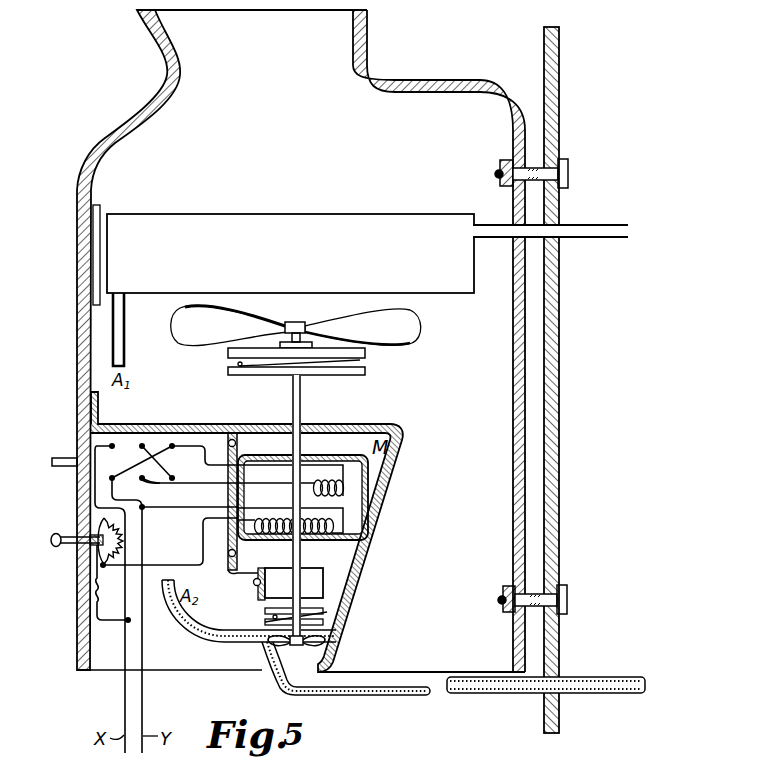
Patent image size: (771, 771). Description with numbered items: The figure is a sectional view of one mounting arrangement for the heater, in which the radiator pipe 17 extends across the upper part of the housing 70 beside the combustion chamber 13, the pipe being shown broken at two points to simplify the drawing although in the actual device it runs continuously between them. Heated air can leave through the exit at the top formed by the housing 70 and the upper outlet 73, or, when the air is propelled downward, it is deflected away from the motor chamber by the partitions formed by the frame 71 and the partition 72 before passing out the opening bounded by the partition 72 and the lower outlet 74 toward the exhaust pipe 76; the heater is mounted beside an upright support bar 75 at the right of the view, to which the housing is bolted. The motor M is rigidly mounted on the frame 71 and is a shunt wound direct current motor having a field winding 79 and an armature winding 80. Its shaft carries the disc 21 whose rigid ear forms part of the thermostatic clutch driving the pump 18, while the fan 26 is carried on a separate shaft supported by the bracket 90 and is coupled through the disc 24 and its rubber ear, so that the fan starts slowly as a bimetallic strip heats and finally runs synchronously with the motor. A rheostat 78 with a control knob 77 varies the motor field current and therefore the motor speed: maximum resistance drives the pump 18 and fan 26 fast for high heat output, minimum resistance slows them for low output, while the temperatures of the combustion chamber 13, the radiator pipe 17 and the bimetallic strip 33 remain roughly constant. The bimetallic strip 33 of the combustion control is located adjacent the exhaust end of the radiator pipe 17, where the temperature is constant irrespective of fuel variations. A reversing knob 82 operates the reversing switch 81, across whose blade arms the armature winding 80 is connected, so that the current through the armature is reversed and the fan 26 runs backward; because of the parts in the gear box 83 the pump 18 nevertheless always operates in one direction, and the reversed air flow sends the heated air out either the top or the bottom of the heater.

The combustion chamber 13 is at (430, 213).
The radiator pipe 17 is at (176, 216).
The pump 18 is at (270, 651).
The disc 21 is at (265, 610).
The disc 24 is at (368, 351).
The fan 26 is at (218, 315).
The bimetallic strip 33 is at (96, 247).
The housing 70 is at (78, 183).
The frame 71 is at (200, 427).
The partition 72 is at (390, 538).
The upper outlet 73 is at (364, 63).
The lower outlet 74 is at (513, 643).
The support bar 75 is at (560, 100).
The exhaust pipe 76 is at (383, 682).
The control knob 77 is at (55, 546).
The rheostat 78 is at (101, 528).
The field winding 79 is at (346, 516).
The armature winding 80 is at (346, 486).
The reversing switch 81 is at (150, 483).
The reversing knob 82 is at (62, 461).
The gear box 83 is at (321, 580).
The bracket 90 is at (316, 346).